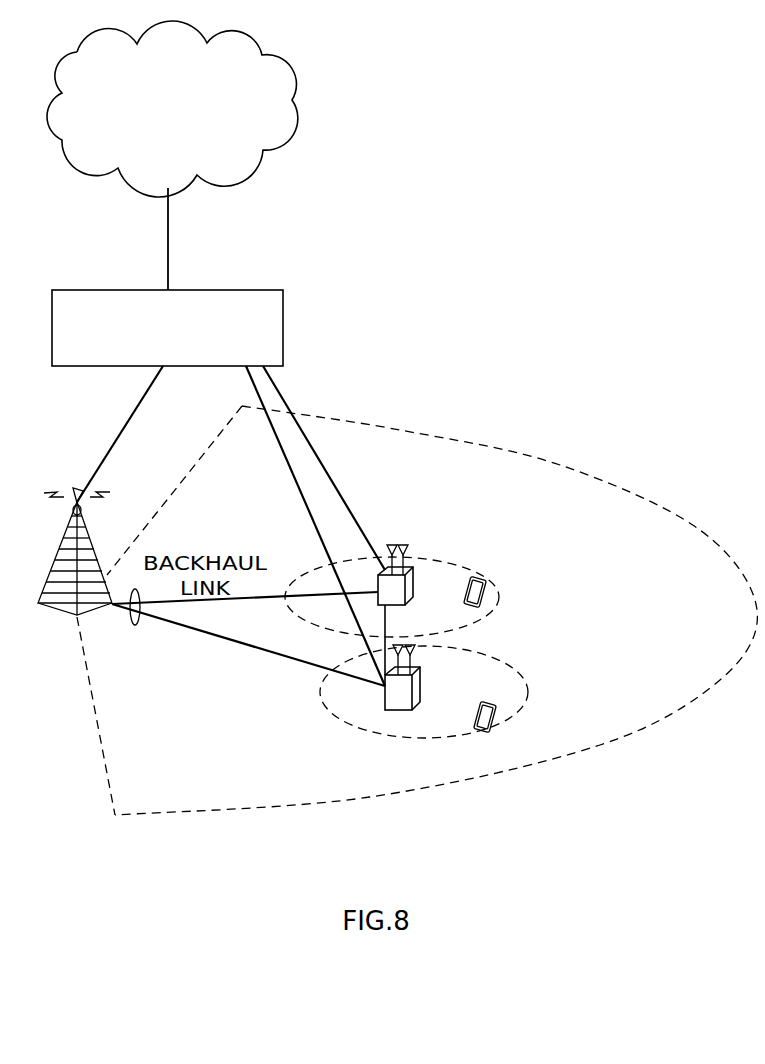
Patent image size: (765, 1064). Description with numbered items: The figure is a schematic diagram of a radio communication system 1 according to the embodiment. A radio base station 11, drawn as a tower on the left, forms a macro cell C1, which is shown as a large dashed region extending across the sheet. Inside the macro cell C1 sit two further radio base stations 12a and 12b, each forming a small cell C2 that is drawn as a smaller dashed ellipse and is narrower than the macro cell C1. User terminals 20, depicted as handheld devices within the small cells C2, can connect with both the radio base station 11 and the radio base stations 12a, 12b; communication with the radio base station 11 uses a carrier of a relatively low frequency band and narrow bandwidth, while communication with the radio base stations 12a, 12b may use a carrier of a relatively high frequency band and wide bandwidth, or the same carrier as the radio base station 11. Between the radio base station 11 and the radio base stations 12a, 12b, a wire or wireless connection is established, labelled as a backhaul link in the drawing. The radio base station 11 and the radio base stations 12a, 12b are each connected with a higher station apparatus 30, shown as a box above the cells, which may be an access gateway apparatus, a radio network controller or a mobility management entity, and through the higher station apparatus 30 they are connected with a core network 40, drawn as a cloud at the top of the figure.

The radio communication system 1 is at (516, 300).
The radio base station 11 is at (56, 566).
The radio base station 12a is at (413, 588).
The radio base station 12b is at (400, 710).
The user terminal 20 is at (479, 576).
The higher station apparatus 30 is at (240, 289).
The core network 40 is at (246, 34).
The macro cell C1 is at (585, 470).
The small cell C2 is at (500, 603).